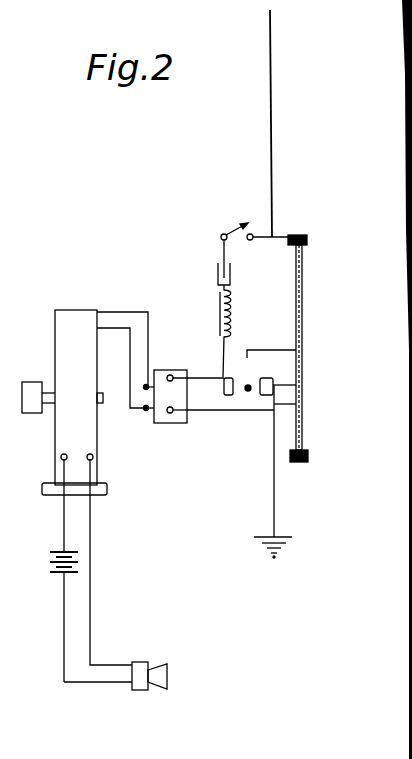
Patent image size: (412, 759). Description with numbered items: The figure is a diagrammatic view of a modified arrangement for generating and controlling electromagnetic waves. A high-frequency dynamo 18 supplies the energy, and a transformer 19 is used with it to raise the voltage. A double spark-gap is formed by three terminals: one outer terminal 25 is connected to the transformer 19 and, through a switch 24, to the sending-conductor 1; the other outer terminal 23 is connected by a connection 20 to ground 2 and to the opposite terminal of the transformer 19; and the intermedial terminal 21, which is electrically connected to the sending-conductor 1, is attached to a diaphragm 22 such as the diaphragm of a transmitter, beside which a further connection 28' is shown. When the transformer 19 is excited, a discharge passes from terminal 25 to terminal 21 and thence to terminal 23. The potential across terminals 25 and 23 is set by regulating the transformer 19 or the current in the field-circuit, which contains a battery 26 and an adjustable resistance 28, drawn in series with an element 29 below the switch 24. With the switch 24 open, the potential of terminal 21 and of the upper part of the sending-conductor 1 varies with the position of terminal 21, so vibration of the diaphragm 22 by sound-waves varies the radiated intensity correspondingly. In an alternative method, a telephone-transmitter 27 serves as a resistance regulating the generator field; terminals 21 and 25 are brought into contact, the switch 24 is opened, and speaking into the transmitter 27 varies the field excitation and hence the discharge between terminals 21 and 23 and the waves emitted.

The antenna 1 is at (274, 137).
The ground 2 is at (285, 475).
The high-frequency dynamo 18 is at (76, 309).
The transformer 19 is at (184, 382).
The conductor 20 is at (238, 406).
The intermedial terminal 21 is at (247, 385).
The diaphragm 22 is at (303, 316).
The outer terminal 23 is at (303, 385).
The switch 24 is at (232, 226).
The terminal 25 is at (225, 379).
The battery 26 is at (48, 571).
The telephone-transmitter 27 is at (115, 575).
The resistance 28 is at (204, 331).
The conductor 28' is at (312, 412).
The condenser 29 is at (204, 262).